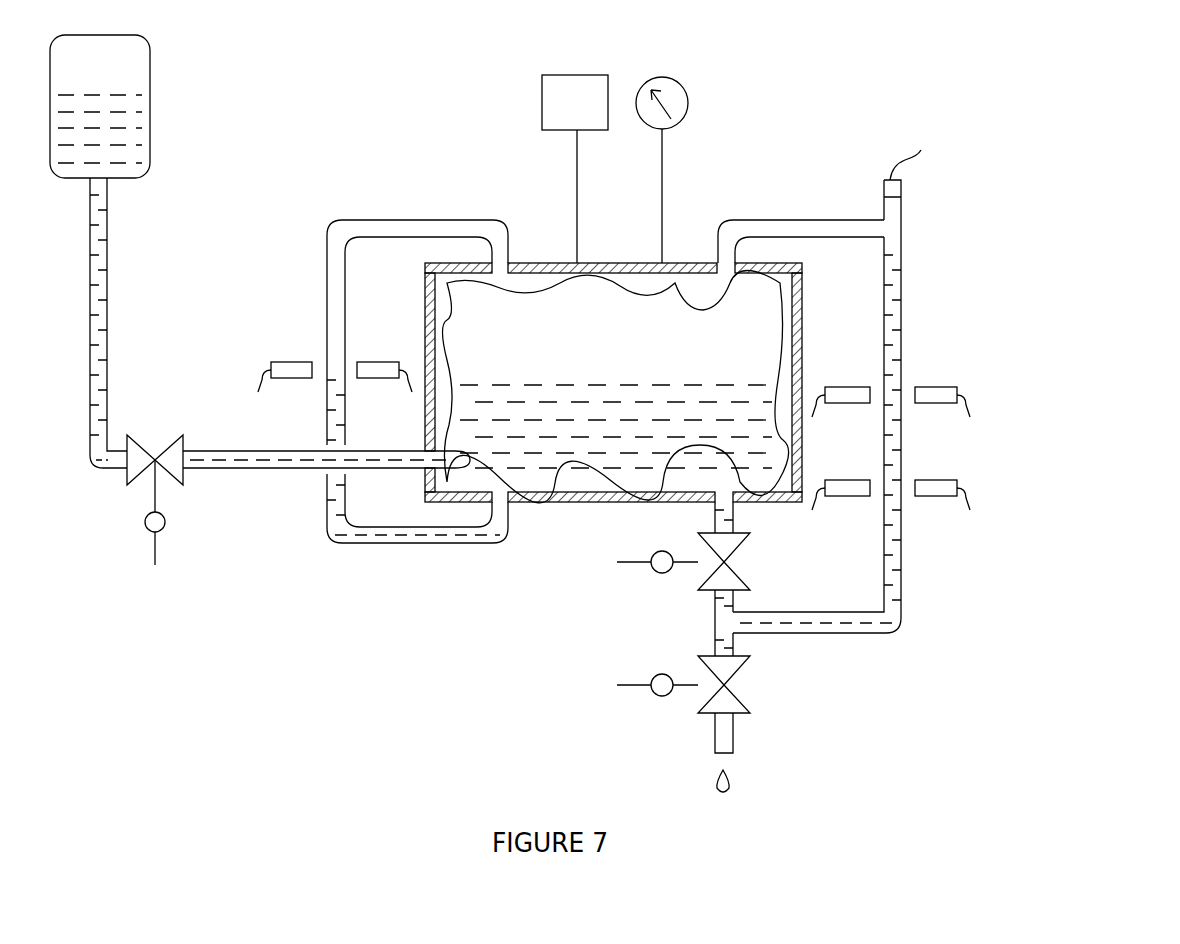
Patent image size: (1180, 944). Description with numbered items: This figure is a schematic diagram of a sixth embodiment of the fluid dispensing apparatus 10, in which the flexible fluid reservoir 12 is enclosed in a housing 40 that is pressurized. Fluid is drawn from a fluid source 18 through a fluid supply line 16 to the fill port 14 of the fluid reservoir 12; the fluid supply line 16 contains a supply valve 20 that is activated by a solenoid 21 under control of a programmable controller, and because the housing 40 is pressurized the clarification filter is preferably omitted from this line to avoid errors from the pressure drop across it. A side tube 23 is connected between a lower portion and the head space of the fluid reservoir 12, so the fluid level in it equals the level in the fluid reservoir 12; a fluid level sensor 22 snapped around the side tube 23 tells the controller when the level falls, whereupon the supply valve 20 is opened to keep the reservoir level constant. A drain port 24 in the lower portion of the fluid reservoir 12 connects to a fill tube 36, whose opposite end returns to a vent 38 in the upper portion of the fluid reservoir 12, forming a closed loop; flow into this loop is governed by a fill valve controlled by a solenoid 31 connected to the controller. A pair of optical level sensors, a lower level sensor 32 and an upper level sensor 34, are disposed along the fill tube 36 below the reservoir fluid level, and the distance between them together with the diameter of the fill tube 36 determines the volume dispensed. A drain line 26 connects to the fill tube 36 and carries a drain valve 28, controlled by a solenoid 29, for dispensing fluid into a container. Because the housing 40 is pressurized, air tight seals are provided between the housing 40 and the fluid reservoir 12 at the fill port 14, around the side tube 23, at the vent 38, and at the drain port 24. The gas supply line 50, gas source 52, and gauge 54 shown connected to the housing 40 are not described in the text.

The dispensing apparatus 10 is at (868, 92).
The fluid reservoir 12 is at (597, 298).
The fill port 14 is at (452, 445).
The fluid supply line 16 is at (100, 276).
The fluid source 18 is at (128, 66).
The supply valve 20 is at (170, 453).
The solenoid 21 is at (143, 520).
The fluid level sensor 22 is at (292, 370).
The side tube 23 is at (420, 228).
The drain port 24 is at (655, 500).
The drain line 26 is at (735, 737).
The drain valve 28 is at (724, 703).
The solenoid 29 is at (660, 697).
The solenoid 31 is at (660, 574).
The lower level sensor 32 is at (934, 492).
The upper level sensor 34 is at (932, 395).
The fill tube 36 is at (893, 607).
The vent 38 is at (693, 307).
The housing 40 is at (890, 217).
The gas supply line 50 is at (545, 262).
The nitrogen source 52 is at (575, 75).
The pressure gauge 54 is at (662, 78).